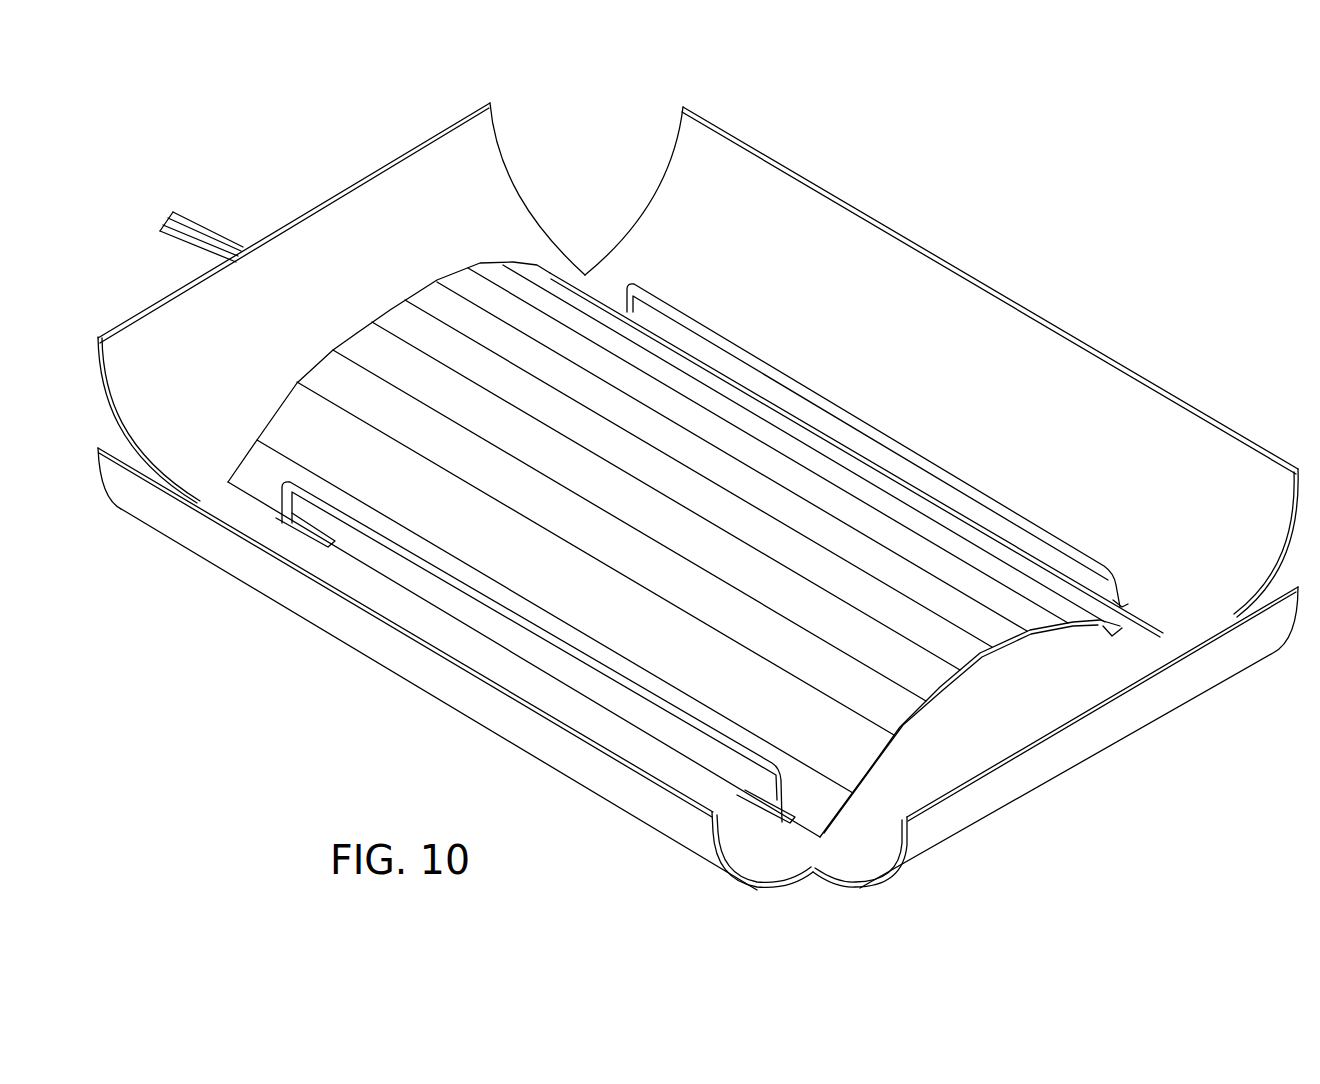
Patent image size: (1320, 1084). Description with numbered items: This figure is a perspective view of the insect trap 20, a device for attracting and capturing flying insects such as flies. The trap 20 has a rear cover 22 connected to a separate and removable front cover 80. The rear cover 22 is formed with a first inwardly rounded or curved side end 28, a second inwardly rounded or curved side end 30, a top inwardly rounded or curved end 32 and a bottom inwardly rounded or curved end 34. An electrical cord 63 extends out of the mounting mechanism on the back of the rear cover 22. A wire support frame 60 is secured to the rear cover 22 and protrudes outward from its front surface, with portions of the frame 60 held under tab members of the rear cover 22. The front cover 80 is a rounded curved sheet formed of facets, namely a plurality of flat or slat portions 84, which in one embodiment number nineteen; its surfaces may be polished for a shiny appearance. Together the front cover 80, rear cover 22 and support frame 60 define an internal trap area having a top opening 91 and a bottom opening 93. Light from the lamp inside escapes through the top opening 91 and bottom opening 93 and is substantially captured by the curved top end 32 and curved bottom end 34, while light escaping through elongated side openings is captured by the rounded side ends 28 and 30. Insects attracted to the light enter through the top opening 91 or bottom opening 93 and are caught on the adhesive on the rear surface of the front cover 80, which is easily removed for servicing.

The insect trap 20 is at (908, 168).
The rear cover 22 is at (783, 850).
The first inwardly rounded or curved side end 28 is at (200, 540).
The second inwardly rounded or curved side end 30 is at (1172, 427).
The top inwardly rounded or curved end 32 is at (365, 215).
The bottom inwardly rounded or curved end 34 is at (862, 862).
The wire support frame 60 is at (1107, 567).
The electrical cord 63 is at (199, 223).
The front cover 80 is at (487, 262).
The flat or slat portions 84 is at (388, 312).
The top opening 91 is at (322, 357).
The bottom opening 93 is at (1115, 637).